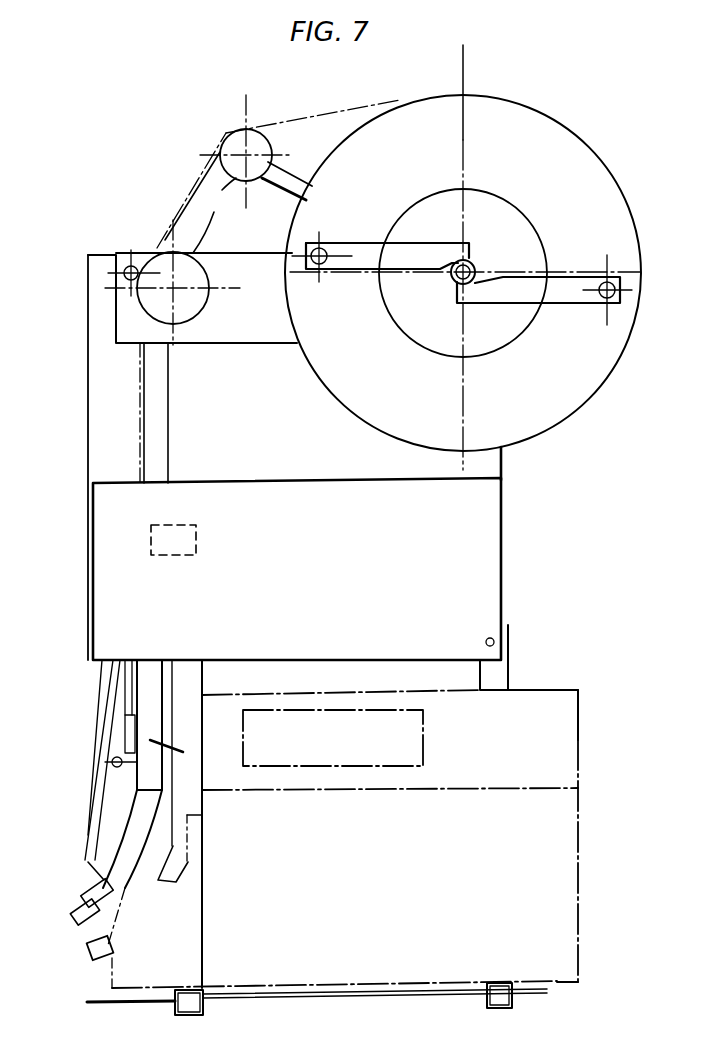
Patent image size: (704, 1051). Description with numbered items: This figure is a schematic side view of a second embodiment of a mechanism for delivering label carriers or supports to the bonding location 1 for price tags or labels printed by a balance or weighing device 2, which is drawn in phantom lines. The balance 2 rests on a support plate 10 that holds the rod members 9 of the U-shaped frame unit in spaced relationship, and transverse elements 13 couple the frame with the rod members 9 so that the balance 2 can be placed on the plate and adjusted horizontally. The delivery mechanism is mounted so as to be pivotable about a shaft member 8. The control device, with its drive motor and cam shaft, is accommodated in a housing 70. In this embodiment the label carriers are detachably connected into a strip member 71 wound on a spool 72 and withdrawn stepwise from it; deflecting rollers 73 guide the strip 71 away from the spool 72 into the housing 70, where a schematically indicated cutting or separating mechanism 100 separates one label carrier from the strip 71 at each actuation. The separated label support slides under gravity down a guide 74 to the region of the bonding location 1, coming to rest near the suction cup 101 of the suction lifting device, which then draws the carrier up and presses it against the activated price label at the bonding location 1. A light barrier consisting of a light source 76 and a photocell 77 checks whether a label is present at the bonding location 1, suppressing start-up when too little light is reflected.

The bonding location 1 is at (163, 900).
The balance or weighing device 2 is at (578, 810).
The shaft member 8 is at (495, 642).
The rod members 9 is at (192, 1010).
The support plate 10 is at (357, 993).
The transverse elements 13 is at (192, 782).
The housing 70 is at (318, 588).
The strip member 71 is at (317, 117).
The spool 72 is at (512, 220).
The deflecting rollers 73 is at (237, 170).
The guide 74 is at (150, 740).
The light source 76 is at (167, 870).
The photocell 77 is at (89, 952).
The cutting or separating mechanism 100 is at (183, 552).
The suction cup 101 is at (96, 899).